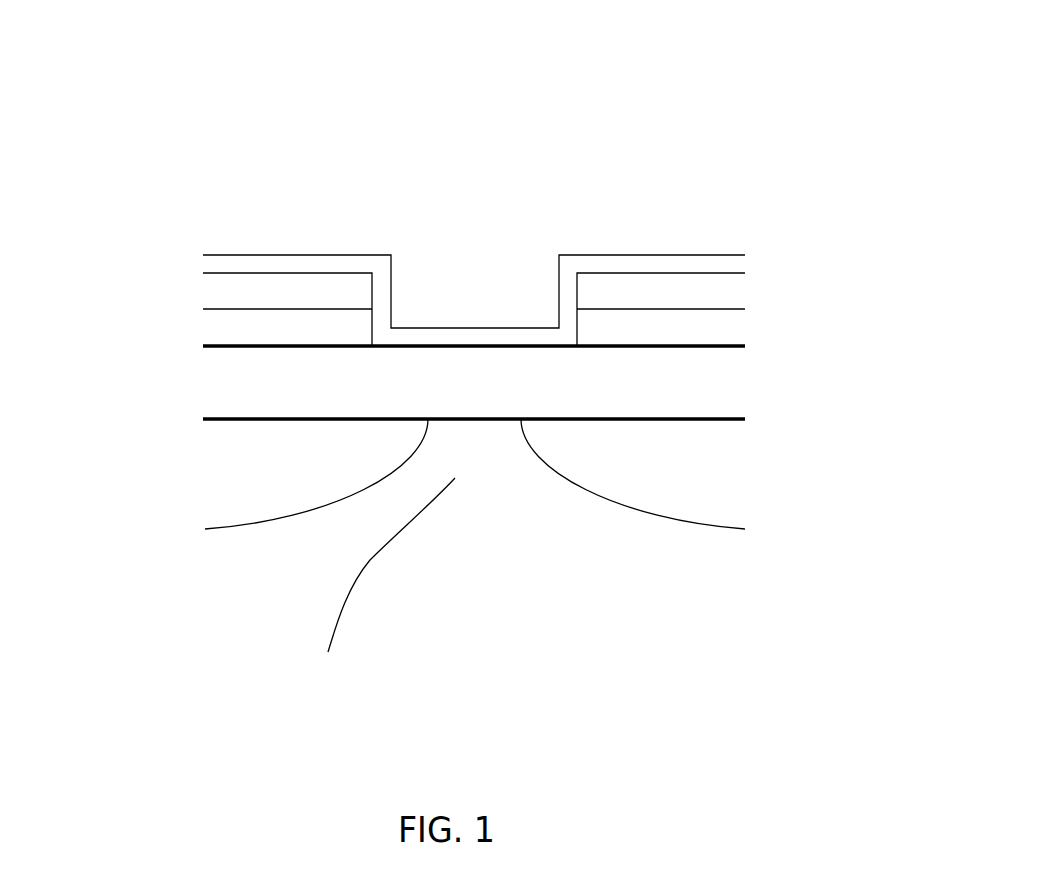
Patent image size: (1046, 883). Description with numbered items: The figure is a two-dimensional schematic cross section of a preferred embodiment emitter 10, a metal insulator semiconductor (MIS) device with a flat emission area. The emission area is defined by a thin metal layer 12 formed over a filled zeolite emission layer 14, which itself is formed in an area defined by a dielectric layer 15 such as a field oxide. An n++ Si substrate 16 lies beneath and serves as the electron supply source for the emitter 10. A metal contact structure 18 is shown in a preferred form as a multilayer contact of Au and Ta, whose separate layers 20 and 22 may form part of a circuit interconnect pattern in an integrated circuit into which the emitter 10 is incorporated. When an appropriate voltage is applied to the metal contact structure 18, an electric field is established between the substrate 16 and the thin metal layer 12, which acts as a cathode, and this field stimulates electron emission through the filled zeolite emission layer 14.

The emitter 10 is at (645, 131).
The thin metal layer 12 is at (233, 263).
The filled zeolite emission layer 14 is at (688, 384).
The dielectric layer 15 is at (255, 464).
The n++ Si substrate 16 is at (384, 583).
The metal contact structure 18 is at (190, 313).
The separate layer 20 is at (693, 327).
The separate layer 22 is at (668, 289).